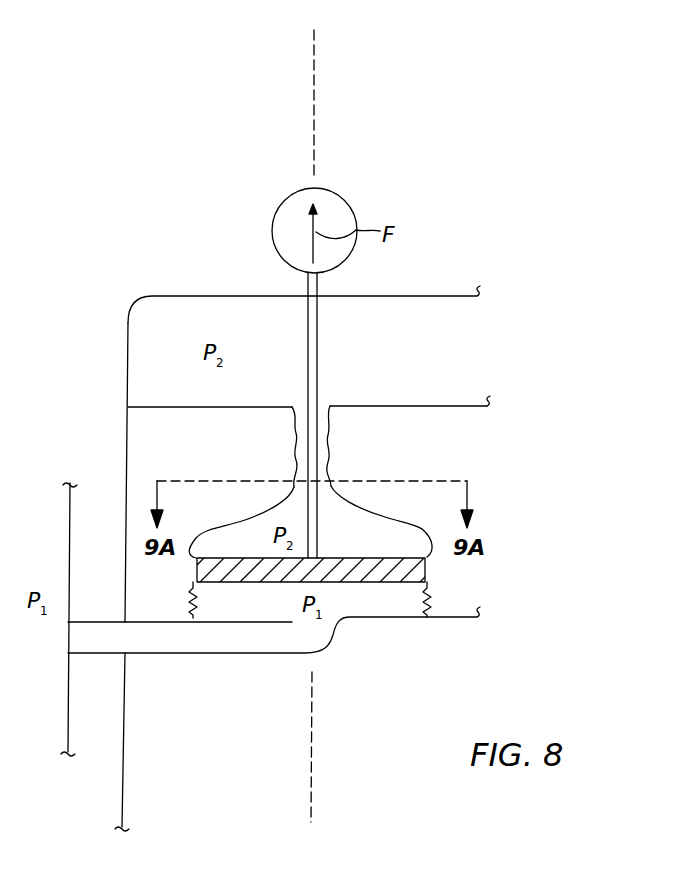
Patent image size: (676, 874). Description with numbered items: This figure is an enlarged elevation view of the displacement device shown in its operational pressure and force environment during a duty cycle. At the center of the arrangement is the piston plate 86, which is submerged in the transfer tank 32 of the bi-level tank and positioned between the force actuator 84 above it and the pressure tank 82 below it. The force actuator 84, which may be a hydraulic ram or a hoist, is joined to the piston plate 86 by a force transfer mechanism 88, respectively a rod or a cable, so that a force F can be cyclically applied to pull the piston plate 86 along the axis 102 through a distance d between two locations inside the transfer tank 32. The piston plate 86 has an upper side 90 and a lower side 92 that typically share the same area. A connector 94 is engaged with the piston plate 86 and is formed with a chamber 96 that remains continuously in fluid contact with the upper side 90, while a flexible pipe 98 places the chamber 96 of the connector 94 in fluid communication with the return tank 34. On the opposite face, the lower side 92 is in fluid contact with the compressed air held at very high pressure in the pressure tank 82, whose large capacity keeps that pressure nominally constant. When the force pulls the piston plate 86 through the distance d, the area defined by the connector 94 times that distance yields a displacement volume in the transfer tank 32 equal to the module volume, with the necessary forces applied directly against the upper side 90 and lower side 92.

The axis 102 is at (316, 72).
The force actuator 84 is at (297, 194).
The force transfer mechanism 88 is at (306, 315).
The return tank 34 is at (407, 362).
The transfer tank 32 is at (408, 457).
The flexible pipe 98 is at (292, 436).
The connector 94 is at (259, 512).
The chamber 96 is at (365, 542).
The upper side 90 is at (425, 552).
The piston plate 86 is at (428, 568).
The lower side 92 is at (378, 585).
The pressure tank 82 is at (50, 548).